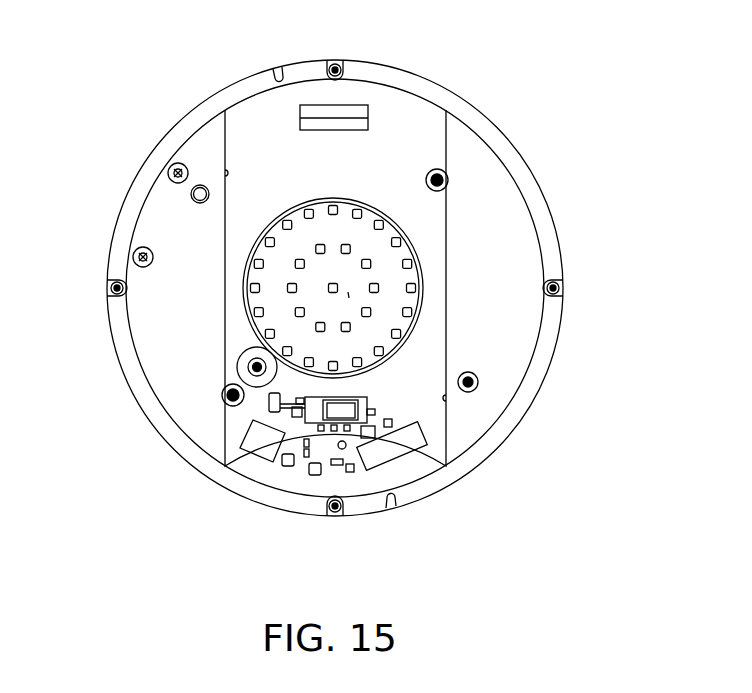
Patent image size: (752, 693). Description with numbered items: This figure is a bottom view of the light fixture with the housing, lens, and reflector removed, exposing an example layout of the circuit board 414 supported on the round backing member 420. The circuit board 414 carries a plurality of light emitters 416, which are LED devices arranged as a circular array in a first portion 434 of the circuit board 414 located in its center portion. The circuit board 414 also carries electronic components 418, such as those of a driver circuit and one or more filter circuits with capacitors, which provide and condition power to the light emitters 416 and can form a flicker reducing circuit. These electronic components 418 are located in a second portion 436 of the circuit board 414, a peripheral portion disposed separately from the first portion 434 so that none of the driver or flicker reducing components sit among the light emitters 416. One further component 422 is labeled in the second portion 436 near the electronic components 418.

The backing member 420 is at (202, 105).
The circuit board 414 is at (429, 228).
The first portion 434 is at (257, 242).
The light emitters 416 is at (382, 310).
The second portion 436 is at (412, 413).
The electronic components 418 is at (375, 453).
The controller chip 422 is at (345, 405).